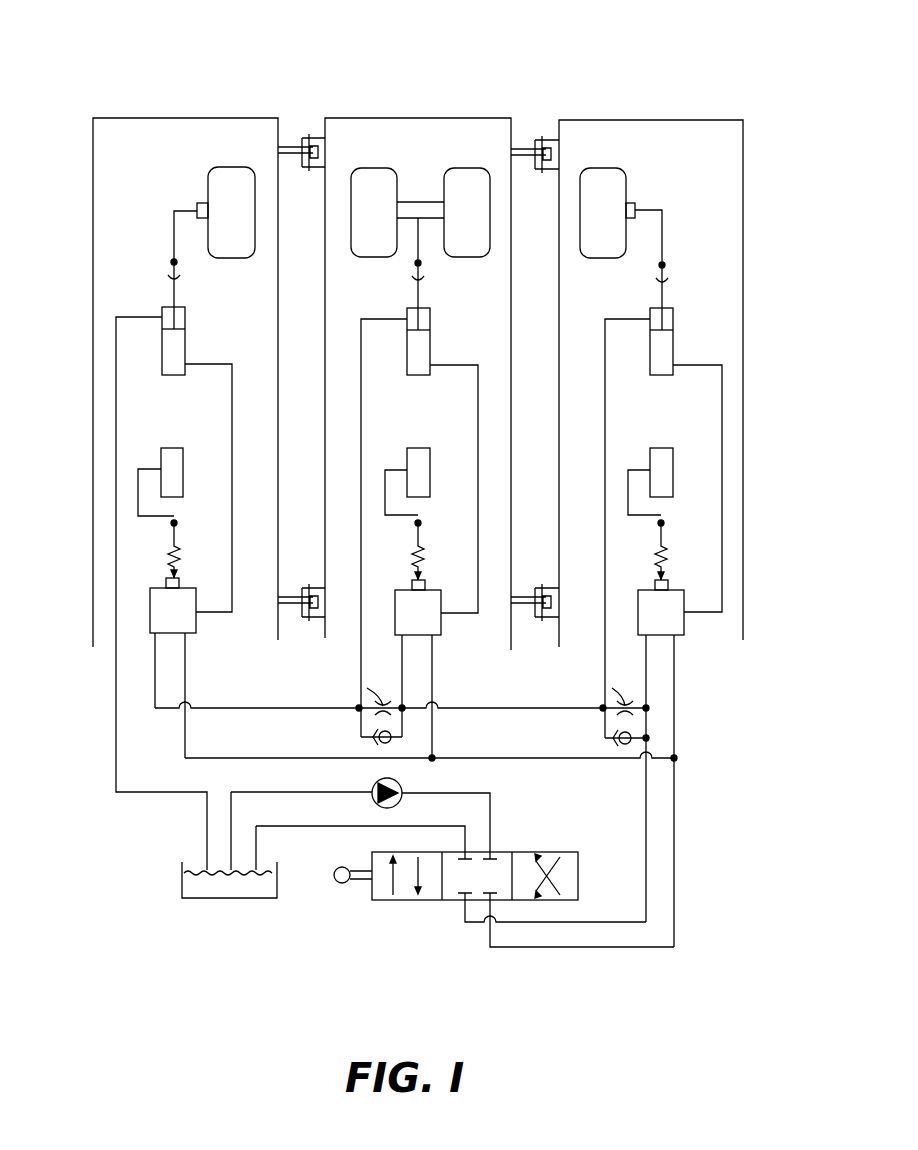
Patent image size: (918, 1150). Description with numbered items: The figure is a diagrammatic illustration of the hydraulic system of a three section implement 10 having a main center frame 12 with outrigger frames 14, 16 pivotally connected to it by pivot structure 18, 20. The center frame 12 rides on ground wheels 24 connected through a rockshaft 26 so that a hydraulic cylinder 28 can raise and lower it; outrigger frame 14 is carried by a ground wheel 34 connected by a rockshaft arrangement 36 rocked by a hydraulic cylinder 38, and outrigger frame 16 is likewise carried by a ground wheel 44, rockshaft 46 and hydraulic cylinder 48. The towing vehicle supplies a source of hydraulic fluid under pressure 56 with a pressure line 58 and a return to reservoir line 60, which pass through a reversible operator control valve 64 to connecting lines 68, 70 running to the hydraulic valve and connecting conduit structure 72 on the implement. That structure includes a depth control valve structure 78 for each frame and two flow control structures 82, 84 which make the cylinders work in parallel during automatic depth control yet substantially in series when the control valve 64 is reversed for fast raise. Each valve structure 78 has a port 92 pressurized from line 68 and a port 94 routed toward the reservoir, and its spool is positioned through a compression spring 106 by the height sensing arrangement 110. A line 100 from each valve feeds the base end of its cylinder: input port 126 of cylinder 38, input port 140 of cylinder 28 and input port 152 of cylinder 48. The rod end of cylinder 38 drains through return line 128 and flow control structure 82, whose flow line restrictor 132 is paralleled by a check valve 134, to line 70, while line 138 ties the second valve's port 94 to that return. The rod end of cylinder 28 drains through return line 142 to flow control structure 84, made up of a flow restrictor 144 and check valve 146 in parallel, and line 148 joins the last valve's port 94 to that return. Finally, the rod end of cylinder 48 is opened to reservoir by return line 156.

The multi-section implement 10 is at (606, 30).
The main center frame 12 is at (376, 107).
The outrigger frame 14 is at (606, 107).
The outrigger frame 16 is at (116, 107).
The pivot structure 18 is at (538, 111).
The pivot structure 20 is at (302, 113).
The ground wheels 24 is at (464, 168).
The rockshaft 26 is at (414, 264).
The hydraulic cylinder 28 is at (430, 308).
The ground wheel 34 is at (622, 168).
The rockshaft arrangement 36 is at (664, 265).
The hydraulic cylinder 38 is at (673, 308).
The ground wheel 44 is at (226, 166).
The rockshaft 46 is at (170, 262).
The hydraulic cylinder 48 is at (185, 307).
The source of hydraulic fluid under pressure 56 is at (168, 883).
The pressure line 58 is at (490, 794).
The return to reservoir line 60 is at (458, 822).
The reversible operator control valve 64 is at (368, 912).
The connecting line 68 is at (674, 902).
The connecting line 70 is at (646, 902).
The hydraulic valve and connecting conduit structure 72 is at (698, 694).
The depth control valve structure 78 is at (192, 586).
The flow control structure 82 is at (623, 689).
The flow control structure 84 is at (379, 691).
The port 92 is at (204, 648).
The port 94 is at (155, 648).
The line 100 is at (232, 400).
The compression spring 106 is at (414, 568).
The depth or height sensing arrangement 110 is at (214, 455).
The input port 126 is at (706, 355).
The return line 128 is at (605, 326).
The flow line restrictor 132 is at (620, 707).
The check valve 134 is at (614, 737).
The line 138 is at (464, 708).
The input port 140 is at (466, 355).
The return line 142 is at (361, 326).
The flow restrictor 144 is at (380, 707).
The check valve 146 is at (378, 737).
The line 148 is at (264, 706).
The input port 152 is at (226, 355).
The return line 156 is at (116, 340).